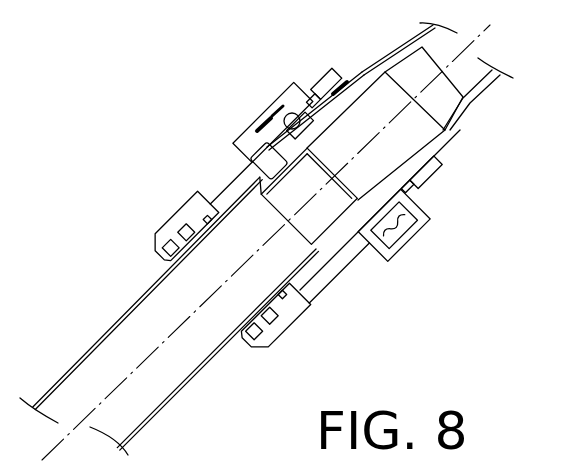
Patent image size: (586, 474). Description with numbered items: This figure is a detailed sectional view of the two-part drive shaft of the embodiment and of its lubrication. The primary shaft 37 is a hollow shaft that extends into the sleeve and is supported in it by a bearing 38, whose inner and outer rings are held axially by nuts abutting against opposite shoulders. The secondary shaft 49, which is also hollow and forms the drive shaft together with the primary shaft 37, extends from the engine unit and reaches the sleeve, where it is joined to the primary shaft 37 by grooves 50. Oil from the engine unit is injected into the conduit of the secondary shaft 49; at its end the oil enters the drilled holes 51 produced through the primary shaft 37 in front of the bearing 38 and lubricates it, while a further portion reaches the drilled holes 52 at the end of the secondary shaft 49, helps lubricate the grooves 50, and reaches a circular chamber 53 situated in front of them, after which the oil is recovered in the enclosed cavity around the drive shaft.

The primary shaft 37 is at (487, 89).
The bearing 38 is at (282, 103).
The secondary shaft 49 is at (198, 380).
The grooves 50 is at (303, 294).
The drilled holes 51 is at (363, 137).
The drilled holes 52 is at (263, 178).
The circular chamber 53 is at (343, 242).